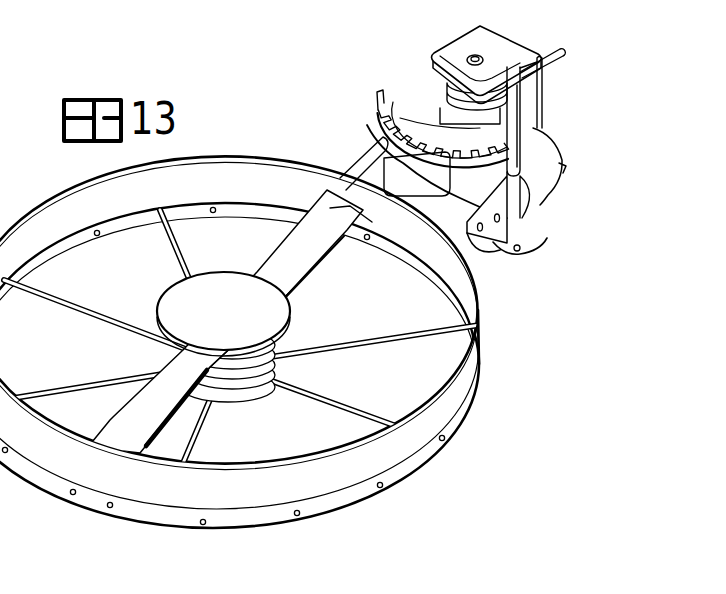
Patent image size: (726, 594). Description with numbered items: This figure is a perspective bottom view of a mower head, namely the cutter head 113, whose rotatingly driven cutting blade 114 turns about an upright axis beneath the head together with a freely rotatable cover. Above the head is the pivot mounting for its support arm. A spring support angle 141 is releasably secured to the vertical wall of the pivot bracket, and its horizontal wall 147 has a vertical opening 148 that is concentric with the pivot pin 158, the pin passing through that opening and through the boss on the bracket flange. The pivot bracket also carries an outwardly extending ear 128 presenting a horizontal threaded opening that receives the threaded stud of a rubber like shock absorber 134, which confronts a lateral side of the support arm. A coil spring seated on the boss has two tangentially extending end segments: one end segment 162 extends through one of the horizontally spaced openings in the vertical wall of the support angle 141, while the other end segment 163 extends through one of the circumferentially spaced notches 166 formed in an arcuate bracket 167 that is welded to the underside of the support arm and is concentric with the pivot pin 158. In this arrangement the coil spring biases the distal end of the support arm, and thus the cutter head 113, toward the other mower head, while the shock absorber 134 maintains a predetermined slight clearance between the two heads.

The cutter head 113 is at (478, 360).
The rotatingly driven cutting blade 114 is at (328, 220).
The outwardly extending ear 128 is at (544, 149).
The rubber like shock absorber 134 is at (540, 193).
The spring support angle 141 is at (483, 25).
The horizontal wall 147 is at (452, 52).
The vertical opening 148 is at (499, 59).
The pivot pin 158 is at (457, 57).
The end segment 162 is at (552, 64).
The end segment 163 is at (539, 88).
The notch 166 is at (445, 148).
The arcuate bracket 167 is at (397, 132).